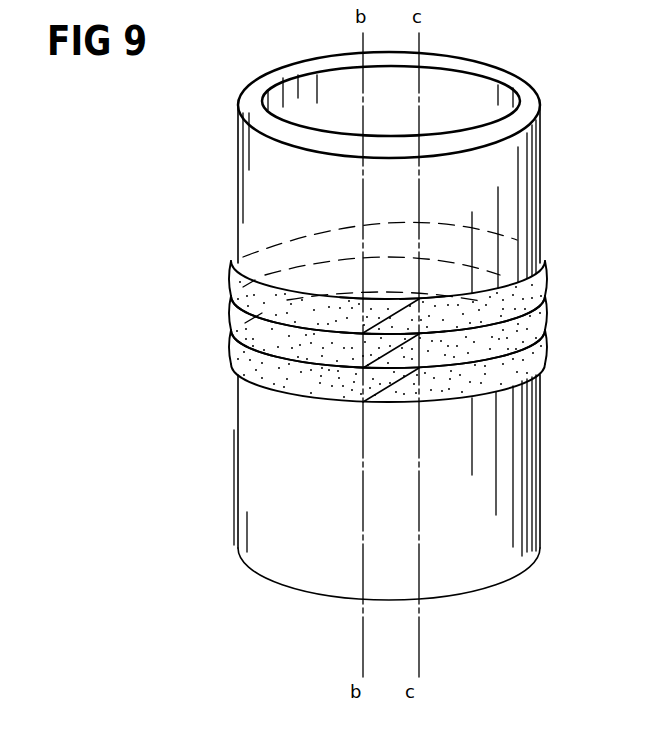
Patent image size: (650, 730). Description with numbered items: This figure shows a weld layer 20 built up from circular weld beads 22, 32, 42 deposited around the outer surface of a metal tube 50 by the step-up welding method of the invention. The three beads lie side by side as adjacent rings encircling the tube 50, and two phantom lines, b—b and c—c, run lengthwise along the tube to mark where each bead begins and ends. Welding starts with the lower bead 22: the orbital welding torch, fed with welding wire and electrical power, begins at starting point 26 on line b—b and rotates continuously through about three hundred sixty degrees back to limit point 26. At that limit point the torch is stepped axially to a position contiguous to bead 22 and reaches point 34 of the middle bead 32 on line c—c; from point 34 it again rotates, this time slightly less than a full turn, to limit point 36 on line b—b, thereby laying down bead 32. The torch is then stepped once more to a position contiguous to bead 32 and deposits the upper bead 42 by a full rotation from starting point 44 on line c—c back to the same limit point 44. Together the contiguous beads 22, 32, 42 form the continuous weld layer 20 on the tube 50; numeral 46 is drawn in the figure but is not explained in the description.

The weld layer 20 is at (550, 258).
The circular weld bead 22 is at (233, 344).
The starting point / limit point 26 is at (361, 383).
The circular weld bead 32 is at (233, 308).
The point 34 is at (417, 353).
The limit point 36 is at (361, 353).
The circular weld bead 42 is at (233, 277).
The starting point / limit point 44 is at (417, 320).
The end portion of third turn at section b 46 is at (361, 320).
The metal tube 50 is at (247, 493).